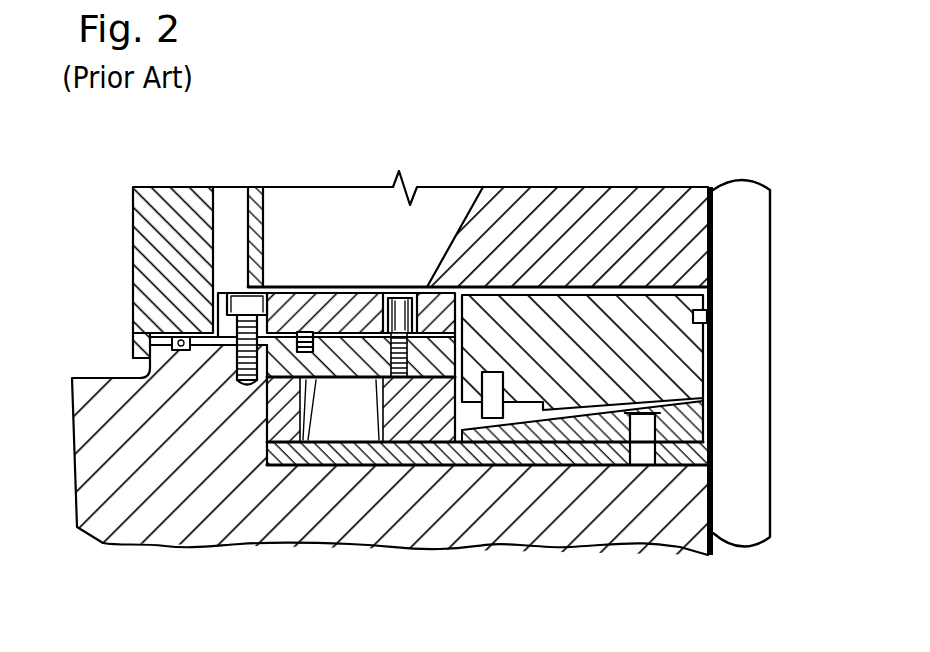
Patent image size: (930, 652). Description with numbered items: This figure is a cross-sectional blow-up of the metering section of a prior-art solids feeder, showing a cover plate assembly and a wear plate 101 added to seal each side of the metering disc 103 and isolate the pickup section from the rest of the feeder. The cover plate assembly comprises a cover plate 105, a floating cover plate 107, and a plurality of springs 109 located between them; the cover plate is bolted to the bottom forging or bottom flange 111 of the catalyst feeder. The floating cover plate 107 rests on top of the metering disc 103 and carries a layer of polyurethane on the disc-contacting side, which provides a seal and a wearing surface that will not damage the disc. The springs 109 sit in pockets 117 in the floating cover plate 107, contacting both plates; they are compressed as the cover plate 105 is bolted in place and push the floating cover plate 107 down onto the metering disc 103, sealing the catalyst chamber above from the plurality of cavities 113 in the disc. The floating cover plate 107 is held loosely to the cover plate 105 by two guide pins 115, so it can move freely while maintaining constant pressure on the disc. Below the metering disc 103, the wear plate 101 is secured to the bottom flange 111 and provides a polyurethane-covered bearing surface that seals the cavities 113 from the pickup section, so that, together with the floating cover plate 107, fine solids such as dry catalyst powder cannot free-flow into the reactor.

The wear plate 101 is at (688, 453).
The metering disc 103 is at (286, 415).
The cover plate 105 is at (365, 287).
The floating cover plate 107 is at (258, 386).
The springs 109 is at (307, 332).
The bottom forging or bottom flange 111 is at (140, 483).
The cavities 113 is at (335, 418).
The guide pins 115 is at (382, 362).
The pockets 117 is at (150, 345).